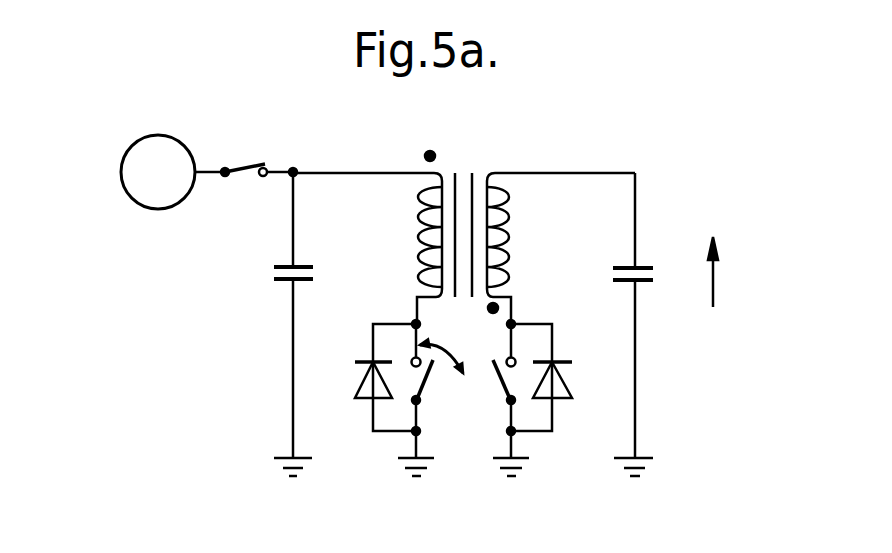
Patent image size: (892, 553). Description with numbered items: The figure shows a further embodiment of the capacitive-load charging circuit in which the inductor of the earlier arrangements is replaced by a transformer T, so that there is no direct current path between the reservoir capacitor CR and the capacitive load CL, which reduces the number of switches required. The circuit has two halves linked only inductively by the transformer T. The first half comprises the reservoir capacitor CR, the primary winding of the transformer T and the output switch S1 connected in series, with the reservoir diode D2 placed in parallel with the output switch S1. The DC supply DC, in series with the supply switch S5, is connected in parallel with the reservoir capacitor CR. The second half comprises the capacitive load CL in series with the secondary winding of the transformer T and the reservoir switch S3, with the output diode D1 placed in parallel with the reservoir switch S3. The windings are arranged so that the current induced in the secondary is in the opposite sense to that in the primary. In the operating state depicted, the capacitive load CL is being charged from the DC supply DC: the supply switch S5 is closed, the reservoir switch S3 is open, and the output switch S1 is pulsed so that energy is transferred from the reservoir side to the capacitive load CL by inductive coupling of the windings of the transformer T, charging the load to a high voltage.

The DC supply DC is at (158, 172).
The supply switch S5 is at (244, 152).
The reservoir capacitor CR is at (267, 275).
The transformer T is at (464, 230).
The capacitive load CL is at (653, 277).
The reservoir diode D2 is at (364, 377).
The output switch S1 is at (435, 391).
The reservoir switch S3 is at (492, 391).
The output diode D1 is at (560, 377).